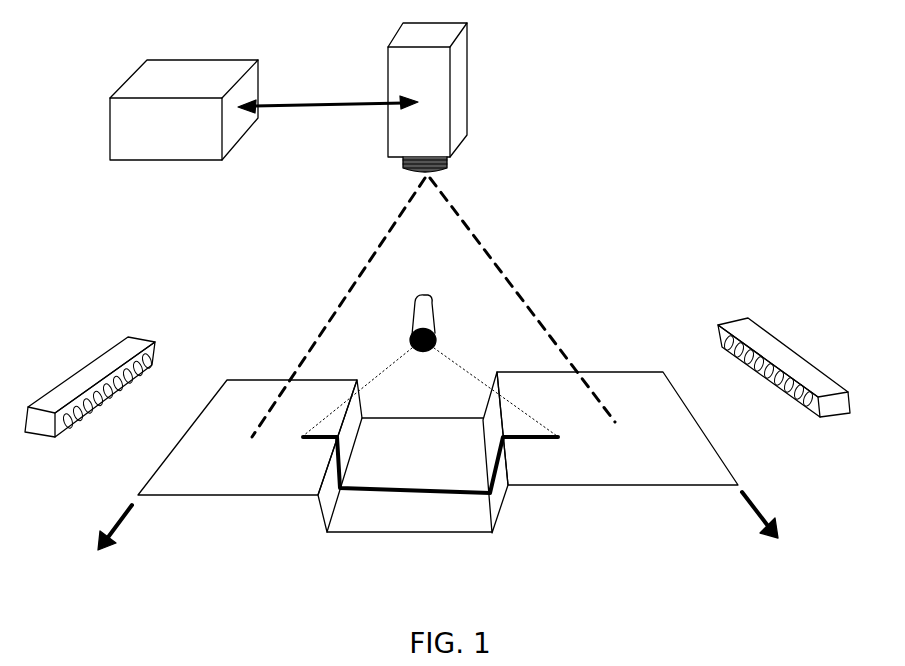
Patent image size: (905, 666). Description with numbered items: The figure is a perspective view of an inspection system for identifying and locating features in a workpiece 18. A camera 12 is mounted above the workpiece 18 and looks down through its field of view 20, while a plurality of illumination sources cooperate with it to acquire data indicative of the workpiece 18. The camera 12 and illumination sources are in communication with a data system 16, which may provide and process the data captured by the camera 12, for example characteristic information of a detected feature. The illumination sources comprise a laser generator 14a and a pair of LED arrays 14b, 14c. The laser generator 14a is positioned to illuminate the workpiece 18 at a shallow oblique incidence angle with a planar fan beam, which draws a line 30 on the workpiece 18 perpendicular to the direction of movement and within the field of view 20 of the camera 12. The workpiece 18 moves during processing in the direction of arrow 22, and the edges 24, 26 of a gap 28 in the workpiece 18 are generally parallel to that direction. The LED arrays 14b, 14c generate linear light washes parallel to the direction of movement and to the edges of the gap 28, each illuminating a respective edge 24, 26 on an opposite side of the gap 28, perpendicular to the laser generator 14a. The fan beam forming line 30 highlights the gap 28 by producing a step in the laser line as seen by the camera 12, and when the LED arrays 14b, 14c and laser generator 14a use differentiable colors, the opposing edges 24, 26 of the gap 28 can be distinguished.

The camera 12 is at (459, 70).
The laser generator 14a is at (420, 315).
The LED array 14b is at (120, 355).
The LED array 14c is at (750, 332).
The data system 16 is at (184, 110).
The workpiece 18 is at (665, 473).
The field of view 20 is at (467, 232).
The arrow 22 is at (445, 537).
The edge 24 is at (327, 500).
The edge 26 is at (498, 495).
The gap 28 is at (490, 550).
The line 30 is at (402, 490).